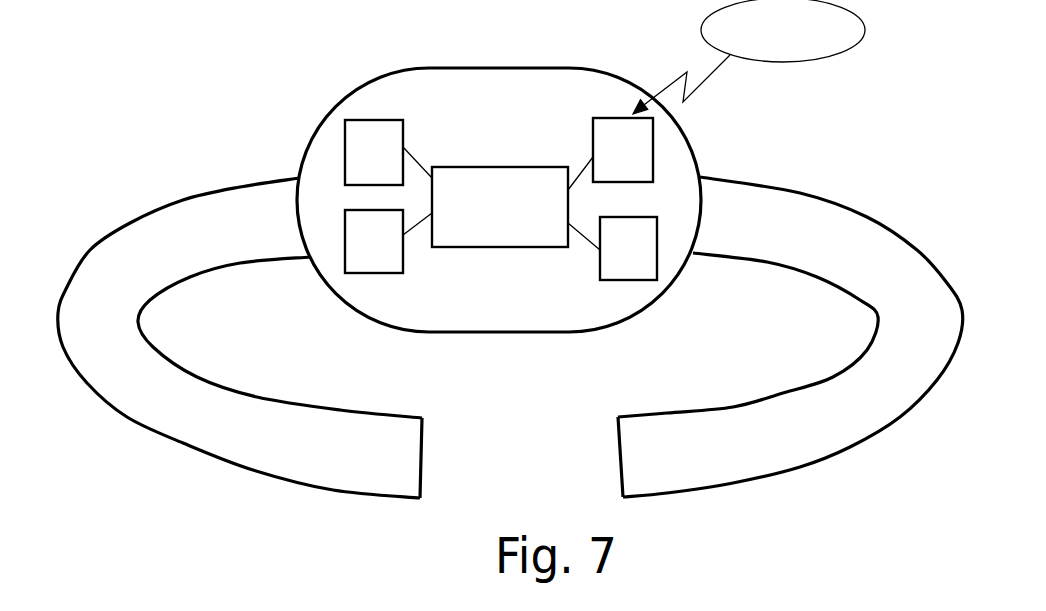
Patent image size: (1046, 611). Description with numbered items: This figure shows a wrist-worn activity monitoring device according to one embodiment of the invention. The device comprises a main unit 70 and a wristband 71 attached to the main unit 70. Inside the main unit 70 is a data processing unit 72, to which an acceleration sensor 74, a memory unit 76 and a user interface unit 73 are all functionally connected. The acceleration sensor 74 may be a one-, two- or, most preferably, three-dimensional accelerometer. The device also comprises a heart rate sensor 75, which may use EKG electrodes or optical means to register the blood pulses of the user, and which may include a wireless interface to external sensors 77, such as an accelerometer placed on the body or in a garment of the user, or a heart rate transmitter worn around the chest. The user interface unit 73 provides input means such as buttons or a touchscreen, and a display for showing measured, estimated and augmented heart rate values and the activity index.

The main unit 70 is at (407, 70).
The wristband 71 is at (203, 193).
The data processing unit 72 is at (510, 214).
The user interface unit 73 is at (648, 267).
The acceleration sensor 74 is at (392, 256).
The heart rate sensor 75 is at (642, 165).
The memory unit 76 is at (392, 167).
The external sensors 77 is at (775, 62).